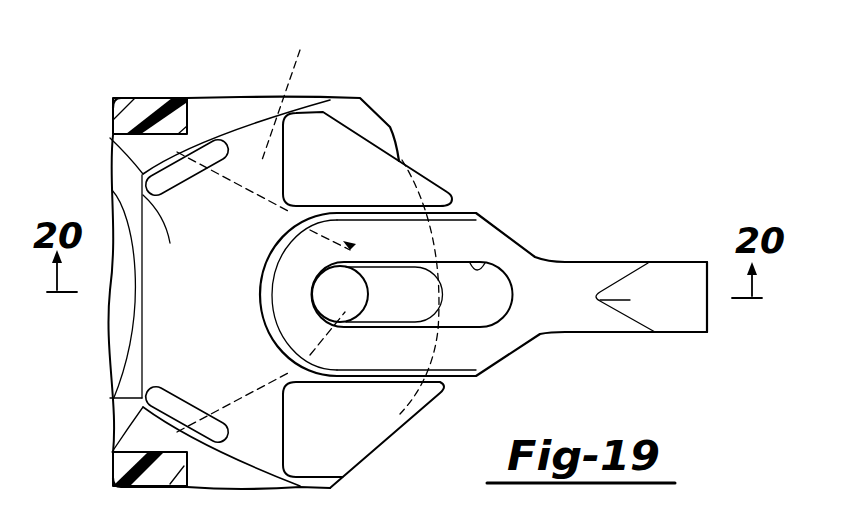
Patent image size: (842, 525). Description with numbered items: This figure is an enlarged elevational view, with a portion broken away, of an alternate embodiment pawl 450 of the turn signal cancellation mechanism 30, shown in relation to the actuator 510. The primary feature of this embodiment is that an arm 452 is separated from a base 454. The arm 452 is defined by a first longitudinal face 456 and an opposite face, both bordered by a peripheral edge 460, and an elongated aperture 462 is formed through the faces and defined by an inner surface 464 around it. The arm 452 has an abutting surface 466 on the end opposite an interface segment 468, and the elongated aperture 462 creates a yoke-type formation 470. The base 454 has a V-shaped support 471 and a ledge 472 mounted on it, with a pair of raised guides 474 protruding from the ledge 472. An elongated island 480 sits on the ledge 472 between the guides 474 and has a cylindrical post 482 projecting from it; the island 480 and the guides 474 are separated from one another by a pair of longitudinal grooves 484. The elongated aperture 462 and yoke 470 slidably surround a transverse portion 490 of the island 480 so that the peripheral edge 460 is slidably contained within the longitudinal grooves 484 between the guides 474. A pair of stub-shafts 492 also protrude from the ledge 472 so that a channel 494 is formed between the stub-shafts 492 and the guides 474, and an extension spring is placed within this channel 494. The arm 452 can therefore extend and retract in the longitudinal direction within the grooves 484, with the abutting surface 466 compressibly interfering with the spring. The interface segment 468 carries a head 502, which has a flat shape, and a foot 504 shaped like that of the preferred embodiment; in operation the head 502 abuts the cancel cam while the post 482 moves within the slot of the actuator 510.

The turn signal cancellation mechanism 30 is at (134, 84).
The pawl 450 is at (455, 155).
The arm 452 is at (550, 333).
The base 454 is at (260, 433).
The first longitudinal face 456 is at (477, 350).
The peripheral edge 460 is at (467, 213).
The elongated aperture 462 is at (503, 262).
The inner surface 464 is at (490, 275).
The abutting surface 466 is at (258, 294).
The interface segment 468 is at (673, 313).
The yoke-type formation 470 is at (405, 358).
The V-shaped support 471 is at (350, 219).
The ledge 472 is at (112, 190).
The raised guides 474 is at (347, 145).
The elongated island 480 is at (413, 290).
The cylindrical post 482 is at (338, 305).
The longitudinal grooves 484 is at (290, 215).
The transverse portion 490 is at (373, 262).
The stub-shafts 492 is at (113, 136).
The channel 494 is at (248, 143).
The head 502 is at (710, 270).
The foot 504 is at (597, 302).
The actuator 510 is at (113, 456).